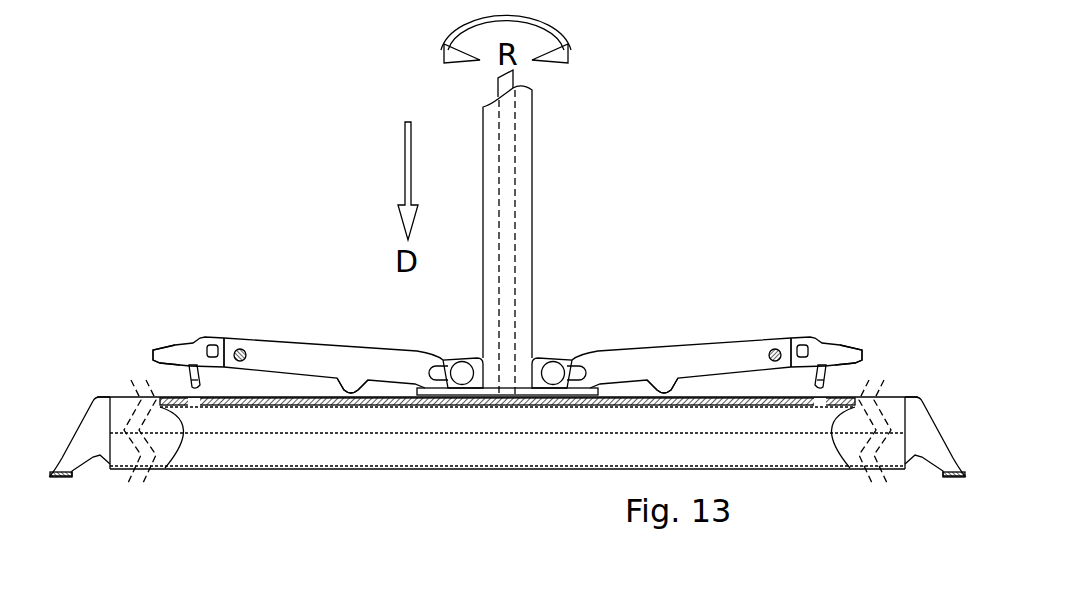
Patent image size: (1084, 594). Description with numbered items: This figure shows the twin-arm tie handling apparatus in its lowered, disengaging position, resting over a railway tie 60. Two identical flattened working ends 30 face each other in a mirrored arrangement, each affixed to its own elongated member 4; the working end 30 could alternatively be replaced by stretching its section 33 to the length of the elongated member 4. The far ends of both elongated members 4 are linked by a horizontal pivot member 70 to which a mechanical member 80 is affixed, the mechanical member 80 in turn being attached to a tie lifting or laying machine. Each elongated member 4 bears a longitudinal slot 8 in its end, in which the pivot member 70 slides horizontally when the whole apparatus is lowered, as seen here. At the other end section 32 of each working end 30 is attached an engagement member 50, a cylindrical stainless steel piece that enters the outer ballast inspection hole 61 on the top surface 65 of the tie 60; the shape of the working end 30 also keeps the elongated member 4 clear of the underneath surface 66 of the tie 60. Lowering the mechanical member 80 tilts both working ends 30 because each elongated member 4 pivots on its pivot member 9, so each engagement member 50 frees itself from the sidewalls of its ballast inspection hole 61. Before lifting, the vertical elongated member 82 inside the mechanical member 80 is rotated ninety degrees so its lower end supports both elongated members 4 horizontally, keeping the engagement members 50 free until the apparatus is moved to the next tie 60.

The elongated member 4 is at (358, 370).
The longitudinal slot 8 is at (432, 363).
The pivot member 9 is at (349, 392).
The working end main body 30 is at (197, 331).
The working end section 32 is at (173, 357).
The section of working end 33 is at (223, 340).
The engagement member 50 is at (195, 385).
The tie 60 is at (93, 425).
The outer ballast inspection hole 61 is at (193, 407).
The top surface 65 is at (128, 394).
The underneath surface 66 is at (354, 405).
The pivot member 70 is at (462, 373).
The mechanical member 80 is at (524, 203).
The vertical elongated member 82 is at (510, 403).